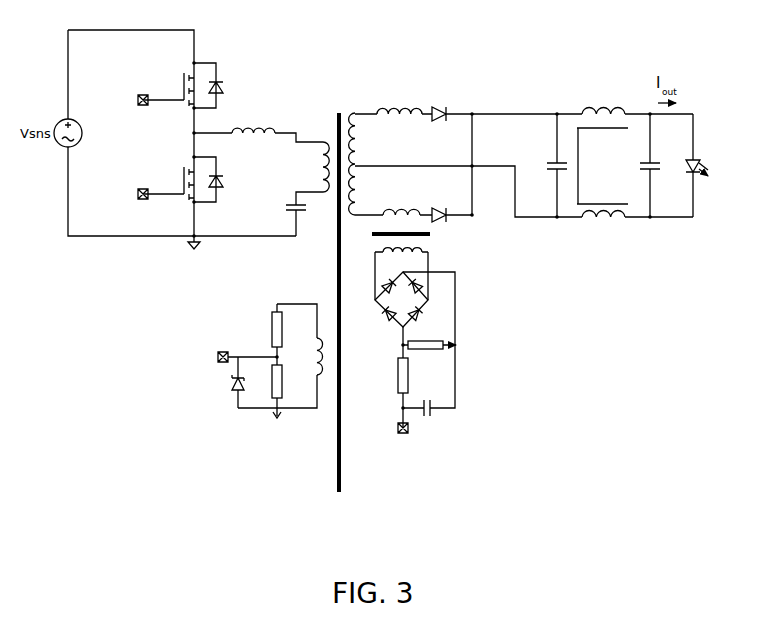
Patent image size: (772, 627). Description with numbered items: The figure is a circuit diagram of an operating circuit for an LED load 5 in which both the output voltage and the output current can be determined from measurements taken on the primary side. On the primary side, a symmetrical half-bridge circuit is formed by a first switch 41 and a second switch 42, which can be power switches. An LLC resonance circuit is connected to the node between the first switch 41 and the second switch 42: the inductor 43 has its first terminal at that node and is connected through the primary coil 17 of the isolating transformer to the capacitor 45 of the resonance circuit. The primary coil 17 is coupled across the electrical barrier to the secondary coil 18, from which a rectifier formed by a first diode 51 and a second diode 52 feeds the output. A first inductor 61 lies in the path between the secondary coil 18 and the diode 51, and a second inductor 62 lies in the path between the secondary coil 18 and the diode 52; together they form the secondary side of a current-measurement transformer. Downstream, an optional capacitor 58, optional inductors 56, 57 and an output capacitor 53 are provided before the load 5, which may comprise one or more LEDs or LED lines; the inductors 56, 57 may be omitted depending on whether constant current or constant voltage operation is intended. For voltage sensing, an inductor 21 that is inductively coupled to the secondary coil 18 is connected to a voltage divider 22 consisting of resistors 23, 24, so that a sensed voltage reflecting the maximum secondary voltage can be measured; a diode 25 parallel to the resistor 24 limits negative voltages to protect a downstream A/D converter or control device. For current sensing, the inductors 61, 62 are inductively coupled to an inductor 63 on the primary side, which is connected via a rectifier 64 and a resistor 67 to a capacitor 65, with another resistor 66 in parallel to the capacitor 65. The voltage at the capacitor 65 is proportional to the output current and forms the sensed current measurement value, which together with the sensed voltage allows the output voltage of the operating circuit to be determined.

The first switch 41 is at (180, 75).
The second switch 42 is at (178, 175).
The inductor 43 is at (261, 133).
The capacitor 45 is at (274, 207).
The primary coil 17 is at (314, 202).
The secondary coil 18 is at (356, 108).
The first inductor 61 is at (398, 112).
The second inductor 62 is at (402, 212).
The first diode 51 is at (440, 106).
The second diode 52 is at (446, 220).
The capacitor 58 is at (554, 166).
The inductor 56 is at (600, 112).
The inductor 57 is at (602, 220).
The output capacitor 53 is at (654, 166).
The load 5 is at (699, 164).
The resistor 23 is at (270, 326).
The resistor 24 is at (281, 382).
The diode 25 is at (234, 392).
The voltage divider 22 is at (270, 414).
The inductor 21 is at (333, 382).
The inductor 63 is at (430, 253).
The rectifier 64 is at (397, 331).
The resistor 66 is at (428, 352).
The resistor 67 is at (395, 376).
The capacitor 65 is at (430, 414).